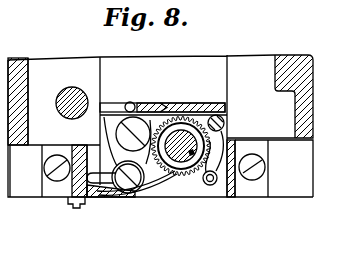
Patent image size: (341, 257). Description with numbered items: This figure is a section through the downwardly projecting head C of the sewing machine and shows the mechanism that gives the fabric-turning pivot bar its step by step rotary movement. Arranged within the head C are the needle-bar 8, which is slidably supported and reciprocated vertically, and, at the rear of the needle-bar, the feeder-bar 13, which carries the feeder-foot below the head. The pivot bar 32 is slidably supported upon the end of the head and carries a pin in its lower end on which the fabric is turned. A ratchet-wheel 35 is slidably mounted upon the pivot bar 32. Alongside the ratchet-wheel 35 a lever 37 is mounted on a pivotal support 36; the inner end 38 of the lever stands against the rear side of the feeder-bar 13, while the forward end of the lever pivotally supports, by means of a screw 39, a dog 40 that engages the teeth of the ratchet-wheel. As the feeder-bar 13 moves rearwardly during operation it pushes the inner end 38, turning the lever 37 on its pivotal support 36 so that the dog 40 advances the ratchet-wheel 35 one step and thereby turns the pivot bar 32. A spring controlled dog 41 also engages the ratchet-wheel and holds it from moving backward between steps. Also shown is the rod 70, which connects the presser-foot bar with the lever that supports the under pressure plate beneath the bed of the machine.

The needle-bar 8 is at (191, 101).
The feeder-bar 13 is at (145, 101).
The pivot bar 32 is at (181, 150).
The ratchet-wheel 35 is at (193, 176).
The pivotal support 36 is at (114, 120).
The lever 37 is at (115, 148).
The inner end of the lever 38 is at (130, 101).
The screw 39 is at (128, 188).
The dog 40 is at (155, 197).
The spring controlled dog 41 is at (240, 195).
The rod 70 is at (72, 87).
The head C is at (160, 112).